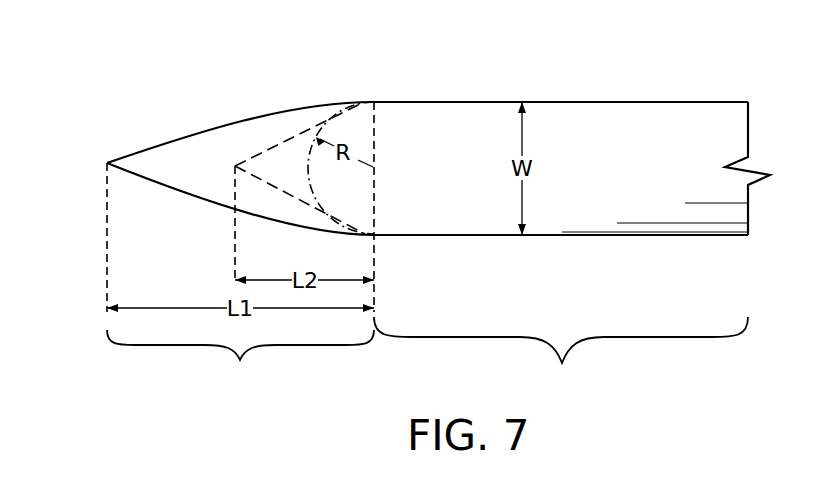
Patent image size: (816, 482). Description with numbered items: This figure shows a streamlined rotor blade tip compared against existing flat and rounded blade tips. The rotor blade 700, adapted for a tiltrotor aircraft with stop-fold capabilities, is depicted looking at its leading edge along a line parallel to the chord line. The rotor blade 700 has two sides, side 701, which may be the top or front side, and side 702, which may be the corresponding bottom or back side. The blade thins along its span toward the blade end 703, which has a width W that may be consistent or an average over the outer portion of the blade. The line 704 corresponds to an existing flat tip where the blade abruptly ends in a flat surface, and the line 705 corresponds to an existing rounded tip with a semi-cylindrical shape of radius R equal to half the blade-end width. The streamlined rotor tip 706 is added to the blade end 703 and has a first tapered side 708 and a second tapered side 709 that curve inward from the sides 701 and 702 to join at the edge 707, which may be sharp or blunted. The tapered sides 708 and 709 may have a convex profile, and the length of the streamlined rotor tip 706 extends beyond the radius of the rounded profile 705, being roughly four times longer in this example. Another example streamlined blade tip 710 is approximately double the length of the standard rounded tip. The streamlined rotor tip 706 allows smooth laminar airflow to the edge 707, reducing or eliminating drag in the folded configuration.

The rotor blade 700 is at (666, 168).
The side 701 is at (603, 102).
The side 702 is at (577, 236).
The blade end 703 is at (561, 358).
The line 704 is at (376, 112).
The line 705 is at (306, 160).
The streamlined rotor tip 706 is at (240, 365).
The edge 707 is at (107, 163).
The first tapered side 708 is at (168, 142).
The second tapered side 709 is at (187, 195).
The streamlined blade tip 710 is at (257, 152).